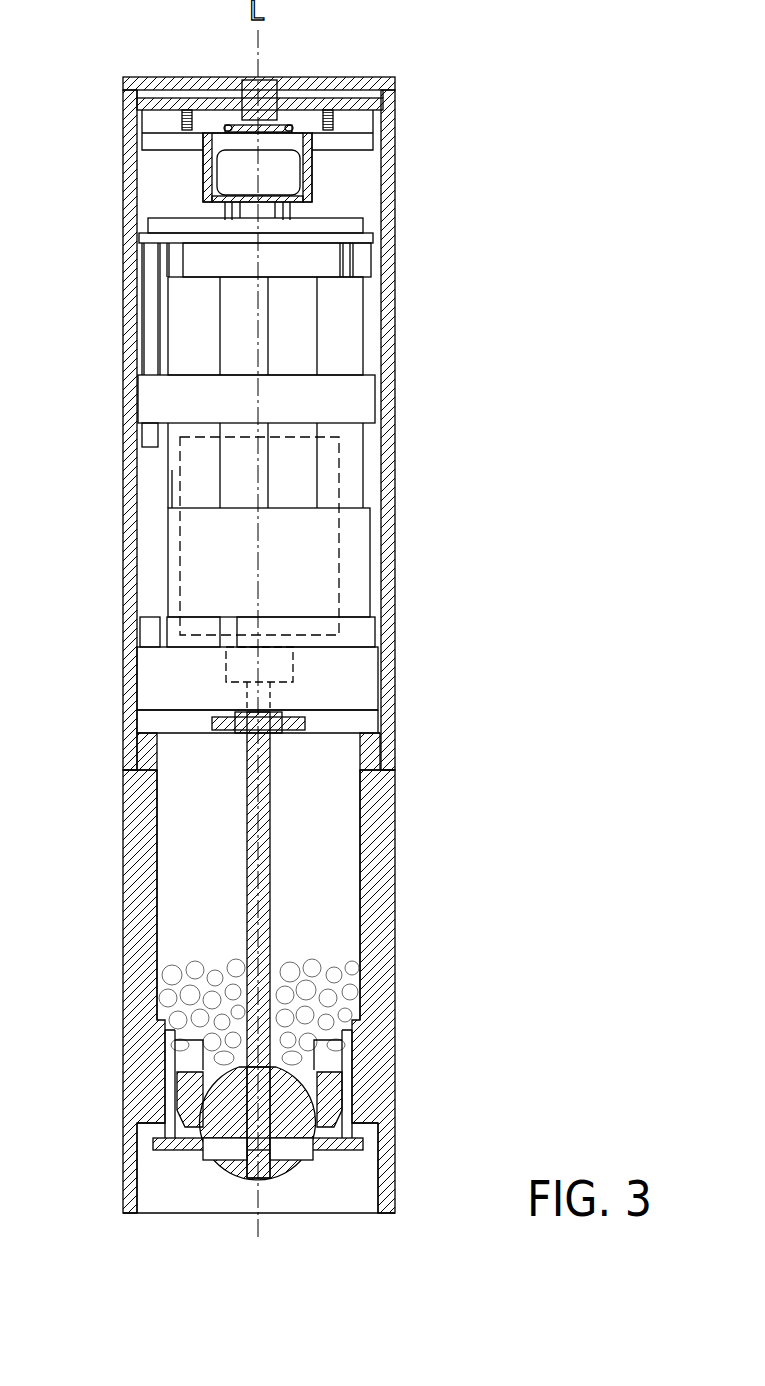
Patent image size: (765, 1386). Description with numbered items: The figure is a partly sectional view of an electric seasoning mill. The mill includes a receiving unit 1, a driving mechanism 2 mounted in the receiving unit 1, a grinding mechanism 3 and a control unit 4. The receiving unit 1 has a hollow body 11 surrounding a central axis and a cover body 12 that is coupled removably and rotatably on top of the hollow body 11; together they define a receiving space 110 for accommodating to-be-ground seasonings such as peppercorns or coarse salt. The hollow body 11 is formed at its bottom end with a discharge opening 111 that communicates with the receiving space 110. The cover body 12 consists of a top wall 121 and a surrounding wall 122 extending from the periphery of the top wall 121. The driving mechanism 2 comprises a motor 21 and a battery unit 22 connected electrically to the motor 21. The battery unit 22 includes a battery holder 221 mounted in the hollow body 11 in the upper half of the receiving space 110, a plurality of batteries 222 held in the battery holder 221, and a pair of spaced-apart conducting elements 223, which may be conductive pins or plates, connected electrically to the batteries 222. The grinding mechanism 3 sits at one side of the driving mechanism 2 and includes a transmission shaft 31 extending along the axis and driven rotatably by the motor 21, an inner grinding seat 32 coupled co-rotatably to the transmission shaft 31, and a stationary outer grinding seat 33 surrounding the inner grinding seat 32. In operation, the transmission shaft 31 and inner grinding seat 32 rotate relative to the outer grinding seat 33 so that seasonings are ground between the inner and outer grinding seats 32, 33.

The receiving unit 1 is at (408, 259).
The hollow body 11 is at (387, 335).
The receiving space 110 is at (343, 942).
The discharge opening 111 is at (343, 1213).
The cover body 12 is at (301, 75).
The top wall 121 is at (305, 84).
The surrounding wall 122 is at (396, 95).
The driving mechanism 2 is at (279, 455).
The motor 21 is at (320, 532).
The battery unit 22 is at (372, 447).
The battery holder 221 is at (350, 572).
The batteries 222 is at (235, 340).
The conducting elements 223 is at (215, 207).
The grinding mechanism 3 is at (318, 830).
The transmission shaft 31 is at (258, 868).
The inner grinding seat 32 is at (287, 1115).
The outer grinding seat 33 is at (343, 1082).
The control unit 4 is at (183, 181).